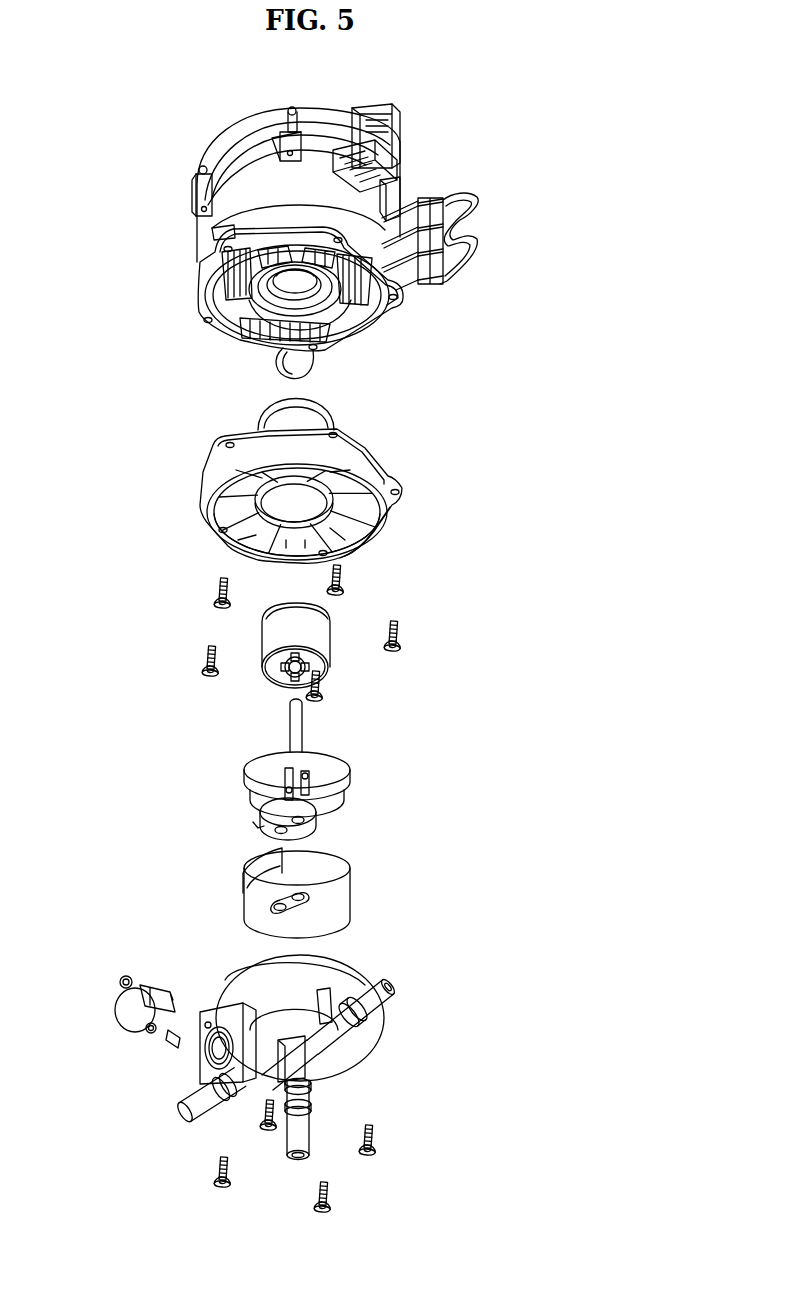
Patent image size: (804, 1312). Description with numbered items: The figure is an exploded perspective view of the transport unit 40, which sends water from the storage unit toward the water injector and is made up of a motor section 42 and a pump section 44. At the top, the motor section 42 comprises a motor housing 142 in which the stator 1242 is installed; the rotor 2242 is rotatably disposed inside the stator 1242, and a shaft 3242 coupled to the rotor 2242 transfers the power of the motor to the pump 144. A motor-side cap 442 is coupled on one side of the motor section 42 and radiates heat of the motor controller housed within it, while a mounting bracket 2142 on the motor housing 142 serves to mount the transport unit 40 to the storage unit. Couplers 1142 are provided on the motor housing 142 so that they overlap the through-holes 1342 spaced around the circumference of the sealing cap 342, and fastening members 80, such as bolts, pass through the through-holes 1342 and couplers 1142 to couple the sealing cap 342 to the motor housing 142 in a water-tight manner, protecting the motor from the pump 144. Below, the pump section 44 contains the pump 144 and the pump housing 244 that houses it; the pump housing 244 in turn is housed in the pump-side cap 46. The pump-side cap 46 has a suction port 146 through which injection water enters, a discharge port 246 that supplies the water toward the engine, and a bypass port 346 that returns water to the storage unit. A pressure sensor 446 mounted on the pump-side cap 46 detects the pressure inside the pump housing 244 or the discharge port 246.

The transport unit 40 is at (476, 134).
The motor section 42 is at (487, 220).
The pump section 44 is at (159, 808).
The pump-side cap 46 is at (390, 1031).
The fastening members 80 is at (216, 594).
The motor housing 142 is at (210, 206).
The pump 144 is at (245, 787).
The suction port 146 is at (373, 1000).
The pump housing 244 is at (243, 893).
The discharge port 246 is at (193, 1105).
The sealing cap 342 is at (362, 467).
The bypass port 346 is at (287, 1138).
The motor-side cap 442 is at (319, 108).
The pressure sensor 446 is at (122, 1005).
The couplers 1142 is at (291, 120).
The stator 1242 is at (353, 313).
The through-holes 1342 is at (400, 488).
The mounting bracket 2142 is at (453, 264).
The rotor 2242 is at (327, 648).
The shaft 3242 is at (302, 733).